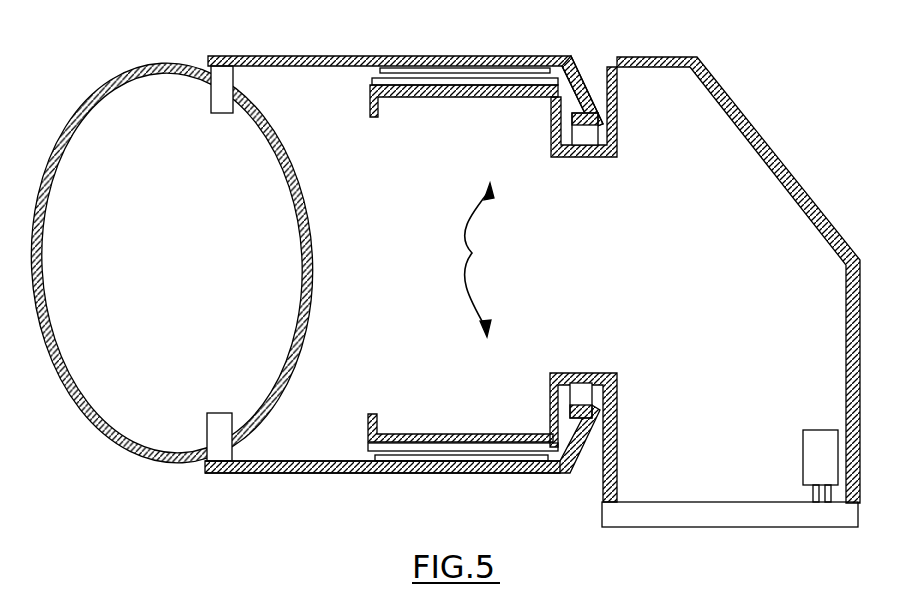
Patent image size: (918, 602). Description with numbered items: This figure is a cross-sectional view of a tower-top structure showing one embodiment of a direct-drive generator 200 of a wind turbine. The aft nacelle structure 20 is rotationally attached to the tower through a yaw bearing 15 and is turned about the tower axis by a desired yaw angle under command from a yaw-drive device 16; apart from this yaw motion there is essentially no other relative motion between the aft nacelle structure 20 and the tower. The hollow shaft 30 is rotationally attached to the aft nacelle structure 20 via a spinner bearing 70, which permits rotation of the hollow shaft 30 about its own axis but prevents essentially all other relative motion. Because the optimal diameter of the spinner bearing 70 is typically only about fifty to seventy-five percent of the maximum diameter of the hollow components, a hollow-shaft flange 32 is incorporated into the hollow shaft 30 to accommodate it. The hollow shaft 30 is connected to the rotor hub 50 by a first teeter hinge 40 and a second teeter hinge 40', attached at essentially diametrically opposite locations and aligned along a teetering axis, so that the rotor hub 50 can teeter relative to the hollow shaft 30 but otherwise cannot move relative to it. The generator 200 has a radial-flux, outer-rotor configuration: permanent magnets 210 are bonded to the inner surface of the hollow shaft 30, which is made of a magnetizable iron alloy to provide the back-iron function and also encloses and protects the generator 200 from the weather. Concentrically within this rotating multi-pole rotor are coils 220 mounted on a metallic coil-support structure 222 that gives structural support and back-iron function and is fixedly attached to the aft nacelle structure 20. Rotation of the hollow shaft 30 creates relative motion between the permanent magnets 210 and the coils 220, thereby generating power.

The yaw bearing 15 is at (733, 512).
The yaw-drive device 16 is at (816, 435).
The aft nacelle structure 20 is at (783, 188).
The hollow shaft 30 is at (300, 474).
The hollow-shaft flange 32 is at (576, 68).
The first teeter hinge 40 is at (205, 118).
The second teeter hinge 40' is at (204, 408).
The rotor hub 50 is at (314, 256).
The spinner bearing 70 is at (586, 140).
The generator 200 is at (500, 260).
The permanent magnets 210 is at (477, 56).
The coils 220 is at (372, 80).
The coil-support structure 222 is at (487, 100).